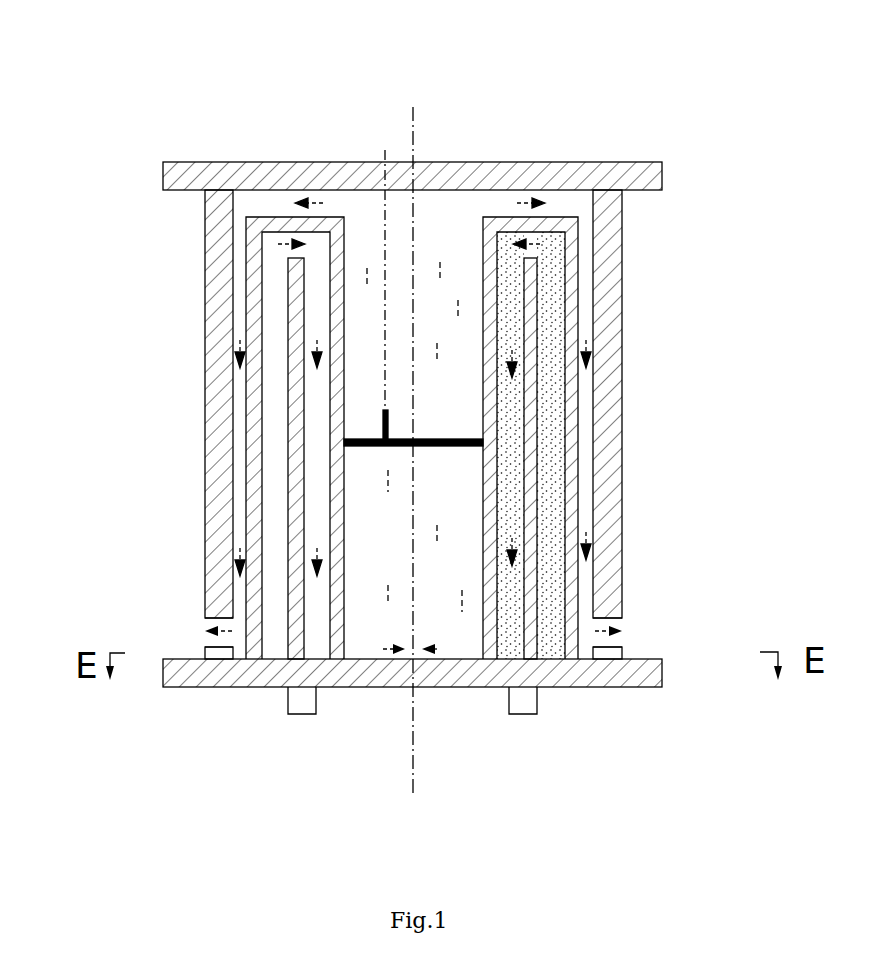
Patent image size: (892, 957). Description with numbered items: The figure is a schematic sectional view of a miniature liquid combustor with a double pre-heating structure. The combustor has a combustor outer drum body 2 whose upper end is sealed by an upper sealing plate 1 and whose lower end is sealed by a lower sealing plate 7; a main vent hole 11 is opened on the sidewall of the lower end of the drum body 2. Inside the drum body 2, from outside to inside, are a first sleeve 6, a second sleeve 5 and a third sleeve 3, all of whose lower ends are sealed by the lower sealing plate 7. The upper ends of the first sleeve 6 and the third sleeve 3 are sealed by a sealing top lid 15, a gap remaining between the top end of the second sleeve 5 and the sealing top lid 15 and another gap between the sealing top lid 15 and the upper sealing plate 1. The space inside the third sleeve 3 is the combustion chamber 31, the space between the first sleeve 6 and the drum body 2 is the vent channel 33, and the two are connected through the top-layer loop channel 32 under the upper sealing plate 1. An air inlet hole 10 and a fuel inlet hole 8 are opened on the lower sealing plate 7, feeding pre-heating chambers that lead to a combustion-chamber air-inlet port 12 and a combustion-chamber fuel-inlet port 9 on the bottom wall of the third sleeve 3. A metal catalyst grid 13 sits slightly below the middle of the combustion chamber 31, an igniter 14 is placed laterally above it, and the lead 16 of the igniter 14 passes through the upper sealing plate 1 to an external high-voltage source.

The upper sealing plate 1 is at (456, 121).
The combustor outer drum body 2 is at (480, 424).
The third sleeve 3 is at (495, 310).
The combustion chamber 31 is at (467, 242).
The top-layer loop channel 32 is at (611, 167).
The vent channel 33 is at (668, 422).
The second sleeve 5 is at (535, 474).
The first sleeve 6 is at (565, 578).
The lower sealing plate 7 is at (459, 701).
The fuel inlet hole 8 is at (632, 746).
The combustion-chamber fuel-inlet port 9 is at (437, 649).
The air inlet hole 10 is at (203, 759).
The main vent hole 11 is at (208, 625).
The combustion-chamber air-inlet port 12 is at (230, 533).
The metal catalyst grid 13 is at (266, 387).
The igniter 14 is at (219, 348).
The sealing top lid 15 is at (199, 387).
The lead 16 is at (251, 207).